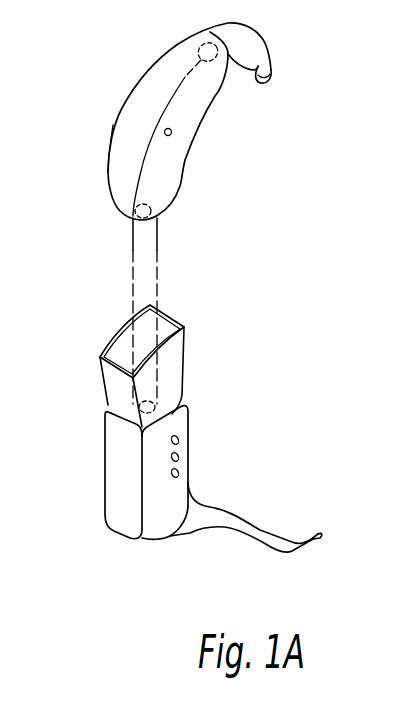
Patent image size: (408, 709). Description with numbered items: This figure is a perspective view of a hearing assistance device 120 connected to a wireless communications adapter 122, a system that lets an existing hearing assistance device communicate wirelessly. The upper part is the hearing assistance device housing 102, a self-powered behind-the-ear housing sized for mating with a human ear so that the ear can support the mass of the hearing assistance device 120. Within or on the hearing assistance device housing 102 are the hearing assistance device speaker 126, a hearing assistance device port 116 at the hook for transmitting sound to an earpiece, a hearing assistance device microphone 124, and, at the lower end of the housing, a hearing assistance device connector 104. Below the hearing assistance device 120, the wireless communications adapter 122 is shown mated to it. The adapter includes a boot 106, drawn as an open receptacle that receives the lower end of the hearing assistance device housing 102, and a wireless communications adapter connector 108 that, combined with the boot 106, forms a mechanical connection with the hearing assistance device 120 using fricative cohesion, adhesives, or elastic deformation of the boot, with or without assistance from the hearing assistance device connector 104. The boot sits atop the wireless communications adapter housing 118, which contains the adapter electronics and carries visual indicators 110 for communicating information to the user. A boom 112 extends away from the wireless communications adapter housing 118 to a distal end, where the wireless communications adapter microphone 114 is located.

The hearing assistance device housing 102 is at (120, 113).
The hearing assistance device connector 104 is at (150, 207).
The boot 106 is at (185, 338).
The wireless communications adapter connector 108 is at (157, 398).
The visual indicators 110 is at (179, 437).
The boom 112 is at (268, 528).
The wireless communications adapter microphone 114 is at (321, 534).
The hearing assistance device port 116 is at (272, 71).
The wireless communications adapter housing 118 is at (106, 457).
The hearing assistance device 120 is at (115, 151).
The wireless communications adapter 122 is at (108, 418).
The hearing assistance device microphone 124 is at (171, 134).
The hearing assistance device speaker 126 is at (213, 60).